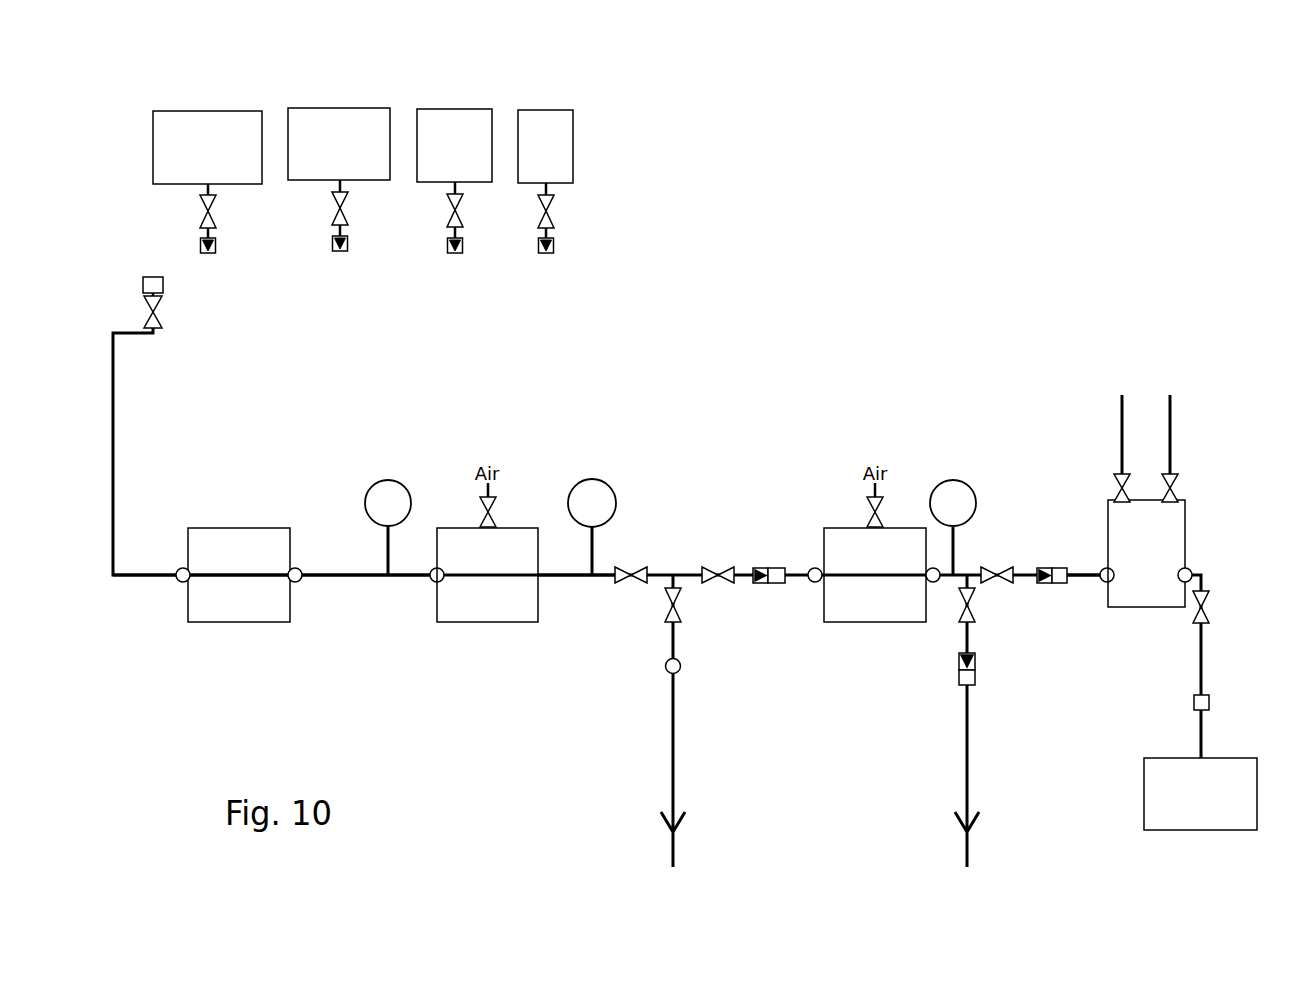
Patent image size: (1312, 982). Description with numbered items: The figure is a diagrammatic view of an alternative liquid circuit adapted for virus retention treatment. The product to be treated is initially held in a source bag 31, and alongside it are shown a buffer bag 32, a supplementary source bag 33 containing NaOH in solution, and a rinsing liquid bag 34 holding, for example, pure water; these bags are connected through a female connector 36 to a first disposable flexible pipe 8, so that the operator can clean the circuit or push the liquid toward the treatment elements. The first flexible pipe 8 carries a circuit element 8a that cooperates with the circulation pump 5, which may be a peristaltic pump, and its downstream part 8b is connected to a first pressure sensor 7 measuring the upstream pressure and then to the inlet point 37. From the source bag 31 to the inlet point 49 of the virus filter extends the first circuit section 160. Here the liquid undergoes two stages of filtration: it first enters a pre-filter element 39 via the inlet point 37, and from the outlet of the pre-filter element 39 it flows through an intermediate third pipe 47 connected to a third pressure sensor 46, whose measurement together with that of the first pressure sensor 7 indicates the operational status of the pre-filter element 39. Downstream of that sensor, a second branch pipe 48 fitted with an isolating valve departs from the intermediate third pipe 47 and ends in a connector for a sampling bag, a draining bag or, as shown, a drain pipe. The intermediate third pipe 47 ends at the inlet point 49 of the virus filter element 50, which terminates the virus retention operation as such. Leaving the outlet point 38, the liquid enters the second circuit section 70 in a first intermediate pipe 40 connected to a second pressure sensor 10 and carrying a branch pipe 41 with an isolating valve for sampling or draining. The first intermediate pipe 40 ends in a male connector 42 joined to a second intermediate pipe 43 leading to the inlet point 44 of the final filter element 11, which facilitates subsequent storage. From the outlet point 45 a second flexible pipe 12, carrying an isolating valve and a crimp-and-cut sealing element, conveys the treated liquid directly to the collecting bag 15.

The source bag 31 is at (210, 111).
The buffer bag 32 is at (342, 108).
The supplementary source bag 33 is at (457, 109).
The rinsing liquid bag 34 is at (547, 110).
The female connector 36 is at (153, 277).
The first disposable flexible pipe 8 is at (113, 452).
The circuit element 8a is at (240, 572).
The first flexible pipe section downstream of pump 8b is at (323, 572).
The first pressure sensor 7 is at (380, 483).
The inlet point 37 is at (431, 580).
The circulation pump 5 is at (240, 602).
The pre-filter element 39 is at (480, 610).
The third pressure sensor 46 is at (583, 482).
The intermediate third pipe 47 is at (565, 579).
The second branch pipe 48 is at (667, 583).
The inlet point of virus filter 49 is at (813, 568).
The virus filter element 50 is at (870, 604).
The second pressure sensor 10 is at (953, 480).
The outlet point 38 is at (942, 587).
The first intermediate pipe 40 is at (963, 573).
The branch pipe 41 is at (972, 582).
The male connector 42 is at (1048, 568).
The second intermediate pipe 43 is at (1087, 579).
The inlet point of final filter 44 is at (1104, 569).
The final filter element 11 is at (1178, 523).
The outlet point of final filter 45 is at (1194, 569).
The second flexible pipe 12 is at (1202, 661).
The collecting bag 15 is at (1241, 793).
The first circuit section 160 is at (547, 719).
The second circuit section 70 is at (1098, 716).